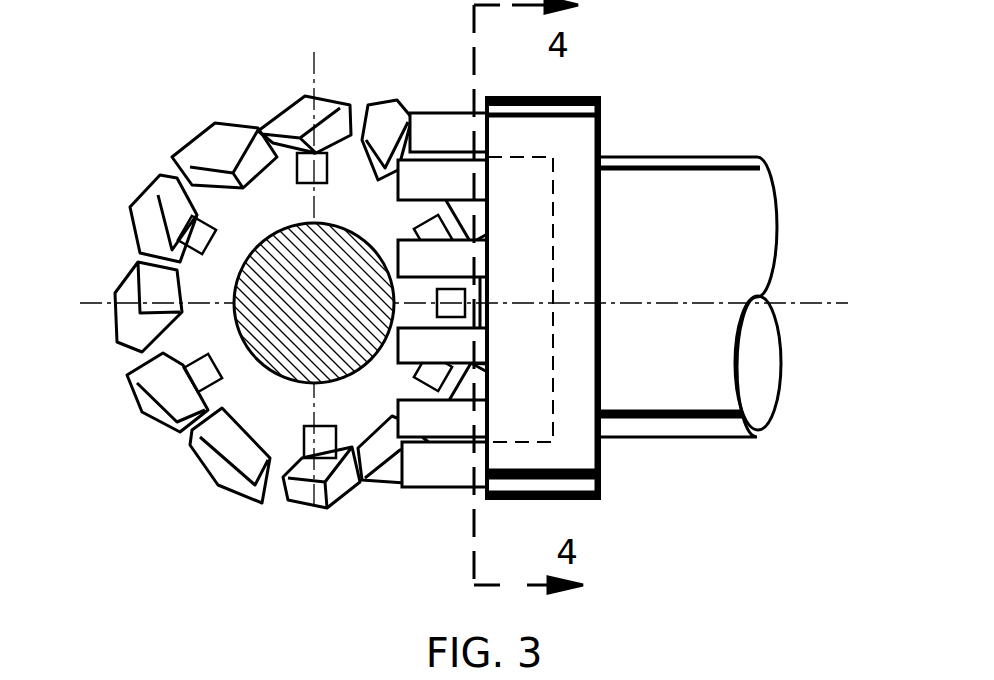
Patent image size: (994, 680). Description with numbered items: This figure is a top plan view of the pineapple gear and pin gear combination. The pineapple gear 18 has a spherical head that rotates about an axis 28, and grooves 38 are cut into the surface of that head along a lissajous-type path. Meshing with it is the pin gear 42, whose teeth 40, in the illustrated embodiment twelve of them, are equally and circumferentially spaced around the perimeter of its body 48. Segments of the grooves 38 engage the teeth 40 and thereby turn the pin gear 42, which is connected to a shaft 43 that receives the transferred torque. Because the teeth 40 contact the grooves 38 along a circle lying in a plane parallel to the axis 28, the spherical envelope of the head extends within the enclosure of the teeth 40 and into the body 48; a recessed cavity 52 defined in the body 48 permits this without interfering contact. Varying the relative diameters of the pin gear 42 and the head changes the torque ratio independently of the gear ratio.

The pineapple gear 18 is at (304, 261).
The axis 28 is at (321, 250).
The groove 38 is at (150, 182).
The teeth 40 is at (450, 115).
The pin gear 42 is at (659, 250).
The shaft 43 is at (633, 157).
The body 48 is at (587, 98).
The cavity 52 is at (553, 390).